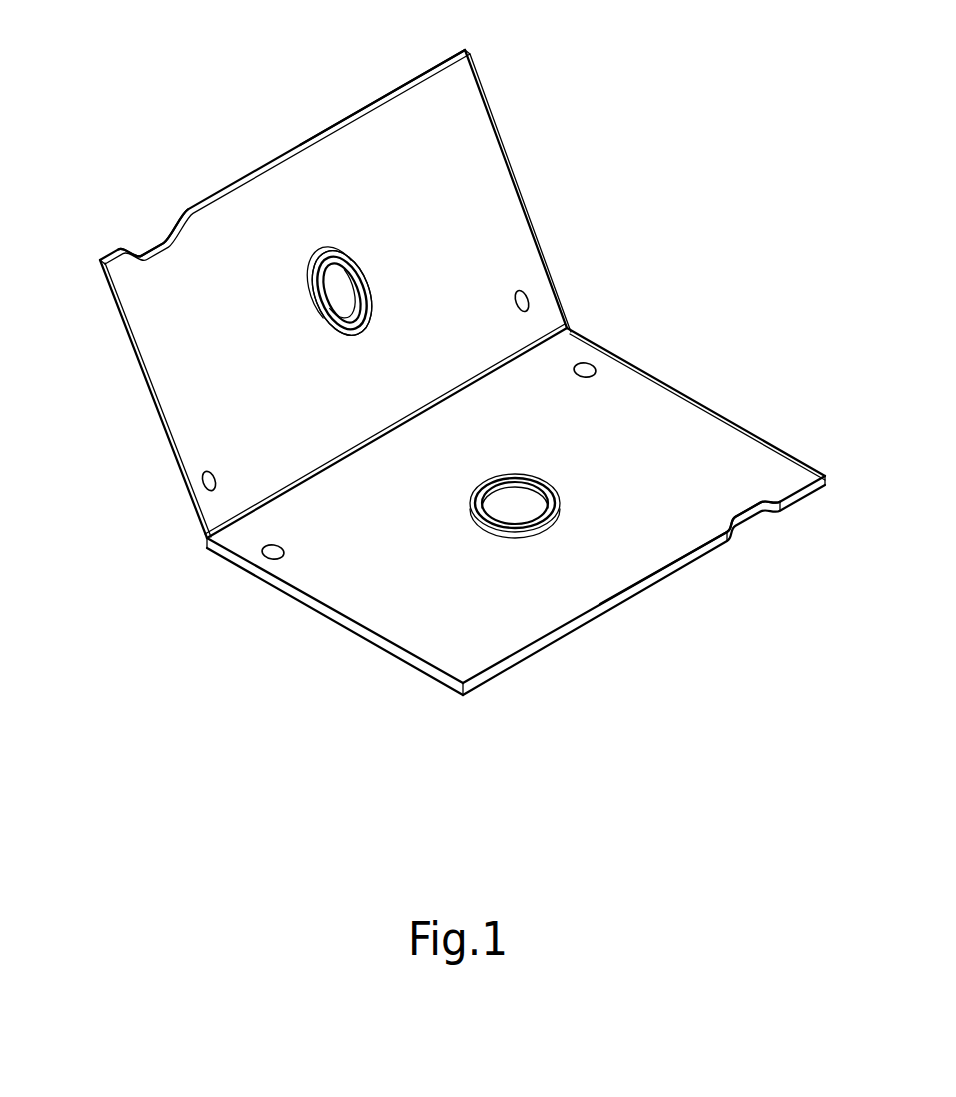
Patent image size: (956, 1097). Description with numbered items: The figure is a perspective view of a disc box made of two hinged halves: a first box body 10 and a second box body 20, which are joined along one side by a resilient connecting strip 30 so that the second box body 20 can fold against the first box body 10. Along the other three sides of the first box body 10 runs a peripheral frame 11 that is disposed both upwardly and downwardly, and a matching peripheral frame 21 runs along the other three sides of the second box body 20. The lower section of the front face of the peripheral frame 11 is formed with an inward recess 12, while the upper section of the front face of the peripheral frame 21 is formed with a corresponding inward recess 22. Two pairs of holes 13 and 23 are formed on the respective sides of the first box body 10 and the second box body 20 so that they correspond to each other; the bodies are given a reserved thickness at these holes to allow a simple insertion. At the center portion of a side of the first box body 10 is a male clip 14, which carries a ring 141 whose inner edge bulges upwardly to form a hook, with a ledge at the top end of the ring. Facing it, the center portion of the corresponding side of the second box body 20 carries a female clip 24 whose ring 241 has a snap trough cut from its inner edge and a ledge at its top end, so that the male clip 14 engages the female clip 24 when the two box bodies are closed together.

The first box body 10 is at (335, 125).
The peripheral frame 11 is at (413, 78).
The inward recess 12 is at (168, 232).
The holes 13 is at (533, 292).
The male clip 14 is at (224, 315).
The ring 141 is at (307, 292).
The second box body 20 is at (742, 420).
The peripheral frame 21 is at (687, 558).
The inward recess 22 is at (767, 507).
The holes 23 is at (587, 366).
The female clip 24 is at (616, 496).
The ring 241 is at (522, 532).
The resilient connecting strip 30 is at (205, 540).